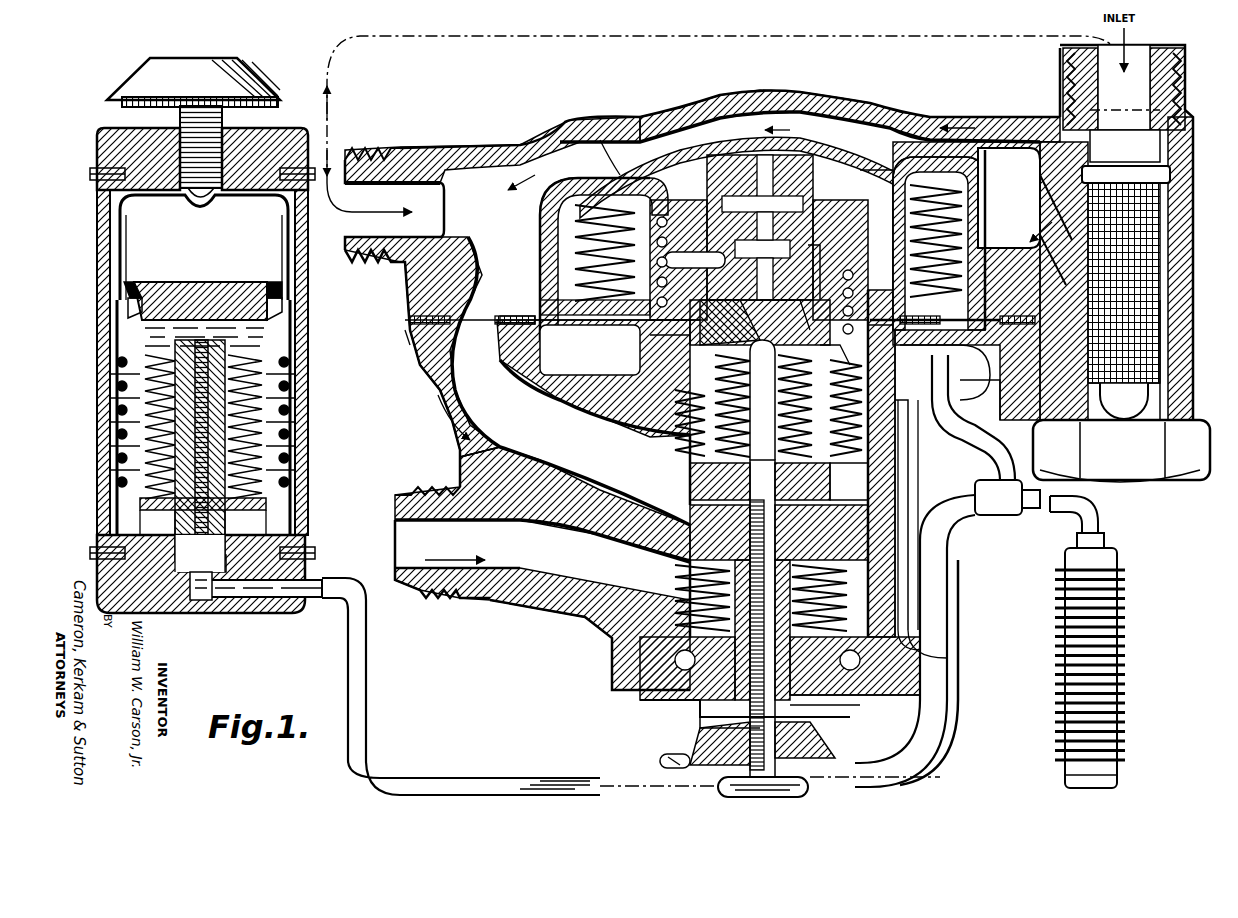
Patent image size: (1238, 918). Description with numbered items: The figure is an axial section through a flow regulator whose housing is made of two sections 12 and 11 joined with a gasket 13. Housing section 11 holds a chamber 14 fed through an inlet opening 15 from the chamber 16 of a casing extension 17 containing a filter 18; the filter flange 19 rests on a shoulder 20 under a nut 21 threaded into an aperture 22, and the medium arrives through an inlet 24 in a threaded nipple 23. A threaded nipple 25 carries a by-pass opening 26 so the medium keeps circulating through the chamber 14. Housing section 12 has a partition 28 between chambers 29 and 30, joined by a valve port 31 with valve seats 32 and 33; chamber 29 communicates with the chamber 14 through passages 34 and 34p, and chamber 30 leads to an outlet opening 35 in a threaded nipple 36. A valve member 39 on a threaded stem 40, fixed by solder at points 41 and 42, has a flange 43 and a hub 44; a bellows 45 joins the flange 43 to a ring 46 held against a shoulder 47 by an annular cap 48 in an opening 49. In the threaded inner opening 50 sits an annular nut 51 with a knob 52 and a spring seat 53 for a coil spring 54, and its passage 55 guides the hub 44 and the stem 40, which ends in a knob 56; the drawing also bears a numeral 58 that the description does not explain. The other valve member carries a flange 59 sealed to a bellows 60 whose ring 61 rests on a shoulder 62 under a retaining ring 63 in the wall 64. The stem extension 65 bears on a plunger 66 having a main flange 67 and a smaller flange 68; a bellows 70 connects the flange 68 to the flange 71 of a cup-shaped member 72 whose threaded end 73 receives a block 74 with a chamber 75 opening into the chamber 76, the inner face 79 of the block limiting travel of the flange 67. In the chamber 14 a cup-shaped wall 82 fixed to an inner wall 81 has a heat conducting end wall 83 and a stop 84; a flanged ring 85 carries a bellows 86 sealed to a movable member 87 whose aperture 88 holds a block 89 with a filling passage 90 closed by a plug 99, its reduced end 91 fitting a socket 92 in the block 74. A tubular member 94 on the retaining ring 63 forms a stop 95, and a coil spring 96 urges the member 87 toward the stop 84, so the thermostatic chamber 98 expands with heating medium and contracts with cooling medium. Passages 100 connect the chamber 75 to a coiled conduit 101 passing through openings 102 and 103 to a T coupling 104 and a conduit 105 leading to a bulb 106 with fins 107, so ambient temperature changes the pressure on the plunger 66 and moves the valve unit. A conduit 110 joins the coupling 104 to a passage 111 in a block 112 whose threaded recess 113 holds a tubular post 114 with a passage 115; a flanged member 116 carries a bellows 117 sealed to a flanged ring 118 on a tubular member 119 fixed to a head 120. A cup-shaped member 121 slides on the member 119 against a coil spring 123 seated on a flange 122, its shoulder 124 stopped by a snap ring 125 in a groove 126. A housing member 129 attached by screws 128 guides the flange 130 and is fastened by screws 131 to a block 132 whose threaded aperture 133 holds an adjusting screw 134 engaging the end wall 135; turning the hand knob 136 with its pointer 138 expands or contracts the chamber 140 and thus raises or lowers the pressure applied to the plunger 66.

The housing section 11 is at (440, 286).
The housing section 12 is at (442, 420).
The gasket 13 is at (410, 335).
The chamber 14 is at (656, 135).
The inlet opening 15 is at (1032, 206).
The chamber 16 is at (1182, 246).
The casing extension 17 is at (1194, 200).
The filter 18 is at (1160, 300).
The flange 19 is at (1175, 152).
The shoulder 20 is at (1193, 118).
The retaining cap or nut 21 is at (1150, 465).
The aperture 22 is at (1193, 362).
The threaded nipple 23 is at (1166, 100).
The inlet 24 is at (1150, 82).
The threaded nipple 25 is at (422, 158).
The by-pass opening 26 is at (447, 193).
The partition 28 is at (617, 512).
The chamber 29 is at (894, 462).
The chamber 30 is at (948, 577).
The valve port 31 is at (910, 505).
The valve seat 32 is at (685, 477).
The valve seat 33 is at (688, 550).
The passage 34 is at (502, 432).
The passage 34p is at (412, 319).
The outlet opening 35 is at (472, 578).
The threaded nipple 36 is at (418, 582).
The valve member 39 is at (938, 540).
The stem 40 is at (728, 724).
The solder point 41 is at (764, 420).
The solder point 42 is at (780, 664).
The peripheral flange 43 is at (690, 572).
The elongated hub 44 is at (835, 620).
The bellows 45 is at (940, 557).
The ring 46 is at (880, 618).
The shoulder 47 is at (960, 635).
The annular cap 48 is at (862, 704).
The opening 49 is at (902, 688).
The inner opening 50 is at (662, 702).
The annular nut 51 is at (812, 735).
The knob 52 is at (660, 762).
The spring seat 53 is at (640, 688).
The coil spring 54 is at (690, 600).
The passage 55 is at (738, 735).
The knob 56 is at (812, 788).
The piston ring 58 is at (836, 478).
The peripheral flange 59 is at (893, 476).
The bellows 60 is at (896, 450).
The ring 61 is at (650, 386).
The shoulder 62 is at (936, 420).
The retaining ring 63 is at (938, 355).
The wall 64 is at (650, 425).
The stem extension 65 is at (763, 378).
The head or plunger 66 is at (742, 312).
The main flange 67 is at (668, 338).
The flange 68 is at (700, 362).
The bellows 70 is at (670, 432).
The inwardly directed flange 71 is at (722, 470).
The cup-shaped member 72 is at (843, 362).
The threaded end 73 is at (847, 278).
The block 74 is at (815, 252).
The internal chamber 75 is at (798, 306).
The chamber 76 is at (868, 328).
The inner face 79 is at (668, 320).
The inner wall 81 is at (562, 285).
The cup-shaped wall 82 is at (985, 190).
The end wall 83 is at (800, 112).
The stop 84 is at (922, 178).
The flanged ring 85 is at (585, 323).
The bellows 86 is at (580, 228).
The movable member or end wall 87 is at (760, 152).
The aperture 88 is at (878, 165).
The block 89 is at (872, 168).
The filling passage 90 is at (772, 160).
The reduced end 91 is at (812, 226).
The socket 92 is at (700, 255).
The tubular member 94 is at (705, 221).
The stop 95 is at (675, 160).
The coil spring 96 is at (633, 322).
The expansible and collapsible chamber 98 is at (612, 158).
The plug 99 is at (745, 200).
The passages 100 is at (768, 256).
The conduit 101 is at (648, 300).
The opening 102 is at (944, 326).
The opening 103 is at (985, 402).
The T coupling 104 is at (1002, 497).
The conduit 105 is at (1100, 512).
The temperature responsive member 106 is at (1128, 643).
The fins 107 is at (1130, 732).
The conduit 110 is at (372, 770).
The passage 111 is at (199, 602).
The block 112 is at (258, 600).
The interiorly threaded recess 113 is at (232, 532).
The tubular post 114 is at (224, 473).
The interior passage 115 is at (180, 522).
The exteriorly flanged member 116 is at (232, 362).
The bellows 117 is at (260, 413).
The flanged ring 118 is at (268, 503).
The exterior tubular member 119 is at (262, 443).
The head 120 is at (206, 283).
The cup-shaped member 121 is at (292, 251).
The exterior flange 122 is at (106, 500).
The coil spring 123 is at (112, 378).
The shoulder 124 is at (292, 293).
The spring snap ring 125 is at (137, 283).
The groove 126 is at (150, 283).
The screws 128 is at (312, 553).
The tubular housing member 129 is at (103, 271).
The exterior flange 130 is at (106, 300).
The screws 131 is at (100, 182).
The block 132 is at (115, 136).
The interiorly threaded aperture 133 is at (222, 156).
The adjusting screw 134 is at (226, 136).
The end wall 135 is at (203, 212).
The hand knob 136 is at (242, 80).
The pointer 138 is at (112, 100).
The expansible and collapsible chamber 140 is at (272, 317).